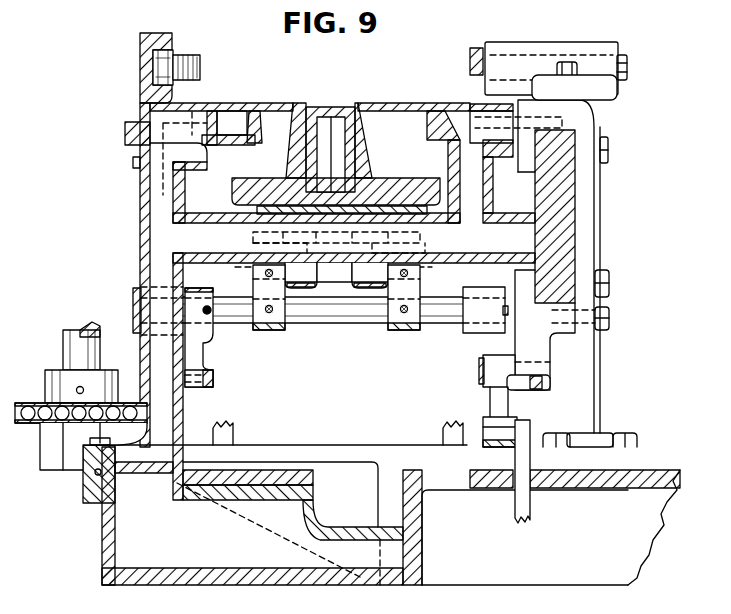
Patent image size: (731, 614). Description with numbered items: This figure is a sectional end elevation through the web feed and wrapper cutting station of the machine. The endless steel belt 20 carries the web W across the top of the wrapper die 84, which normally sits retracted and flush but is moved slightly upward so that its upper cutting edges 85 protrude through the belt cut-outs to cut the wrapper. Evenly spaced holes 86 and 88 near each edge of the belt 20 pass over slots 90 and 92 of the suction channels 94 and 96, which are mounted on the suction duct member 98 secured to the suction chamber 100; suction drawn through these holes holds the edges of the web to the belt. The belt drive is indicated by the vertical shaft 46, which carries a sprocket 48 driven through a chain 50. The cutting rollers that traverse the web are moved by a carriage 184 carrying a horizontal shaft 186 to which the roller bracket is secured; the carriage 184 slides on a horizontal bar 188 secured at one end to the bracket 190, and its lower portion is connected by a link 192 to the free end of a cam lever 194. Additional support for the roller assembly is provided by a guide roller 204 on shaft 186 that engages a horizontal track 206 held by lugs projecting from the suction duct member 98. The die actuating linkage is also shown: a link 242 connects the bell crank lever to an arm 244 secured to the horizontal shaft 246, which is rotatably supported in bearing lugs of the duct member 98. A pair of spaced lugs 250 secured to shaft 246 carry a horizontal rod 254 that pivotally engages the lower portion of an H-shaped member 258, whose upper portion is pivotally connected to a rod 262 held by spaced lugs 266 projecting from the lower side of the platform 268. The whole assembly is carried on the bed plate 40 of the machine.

The endless steel belt 20 is at (310, 94).
The bed plate 40 is at (551, 527).
The vertical shaft 46 is at (61, 342).
The sprocket 48 is at (73, 446).
The chain 50 is at (73, 396).
The wrapper die 84 is at (346, 140).
The upper cutting edges 85 is at (324, 129).
The holes 86 is at (260, 105).
The holes 88 is at (425, 88).
The slot 90 is at (252, 126).
The slot 92 is at (422, 125).
The suction channel 94 is at (202, 136).
The suction channel 96 is at (503, 151).
The suction duct member 98 is at (121, 275).
The suction chamber 100 is at (297, 419).
The carriage 184 is at (574, 229).
The horizontal shaft 186 is at (328, 60).
The horizontal bar 188 is at (591, 216).
The bracket 190 is at (582, 273).
The link 192 is at (478, 415).
The cam lever 194 is at (548, 471).
The guide roller 204 is at (128, 68).
The horizontal track 206 is at (128, 68).
The link 242 is at (225, 407).
The arm 244 is at (217, 337).
The horizontal shaft 246 is at (293, 308).
The spaced lugs 250 is at (346, 321).
The horizontal rod 254 is at (318, 305).
The H-shaped member 258 is at (373, 307).
The rod 262 is at (366, 237).
The spaced lugs 266 is at (332, 256).
The platform 268 is at (334, 182).